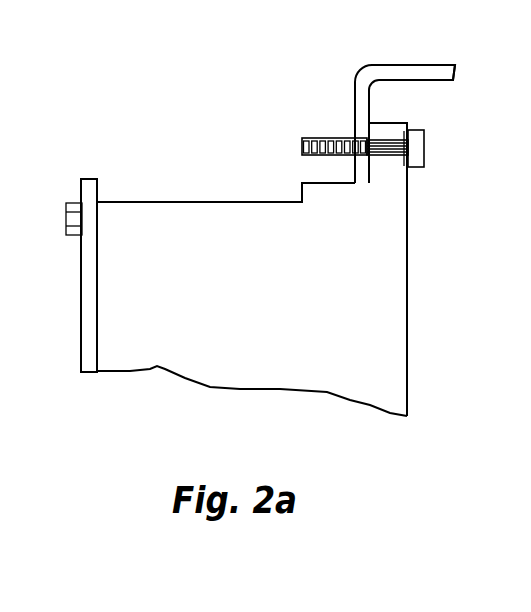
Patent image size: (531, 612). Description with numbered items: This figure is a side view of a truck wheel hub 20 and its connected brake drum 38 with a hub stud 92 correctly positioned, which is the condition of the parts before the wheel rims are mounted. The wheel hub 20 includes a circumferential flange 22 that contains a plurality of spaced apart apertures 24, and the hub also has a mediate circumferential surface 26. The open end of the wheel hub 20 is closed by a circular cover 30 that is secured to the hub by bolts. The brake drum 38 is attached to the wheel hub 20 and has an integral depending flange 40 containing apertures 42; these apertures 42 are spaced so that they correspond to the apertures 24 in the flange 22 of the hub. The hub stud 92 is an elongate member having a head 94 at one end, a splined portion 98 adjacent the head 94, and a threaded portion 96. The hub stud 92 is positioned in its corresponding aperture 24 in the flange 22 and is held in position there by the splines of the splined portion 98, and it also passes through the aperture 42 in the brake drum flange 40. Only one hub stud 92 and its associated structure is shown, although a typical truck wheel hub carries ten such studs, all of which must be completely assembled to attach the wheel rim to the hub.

The wheel hub 20 is at (247, 266).
The circumferential flange 22 is at (393, 175).
The apertures 24 is at (380, 143).
The mediate circumferential surface 26 is at (323, 183).
The circular cover 30 is at (92, 185).
The brake drum 38 is at (445, 73).
The depending flange 40 is at (357, 93).
The apertures 42 is at (360, 157).
The hub stud 92 is at (342, 140).
The head 94 is at (418, 147).
The threaded portion 96 is at (302, 141).
The splined portion 98 is at (398, 138).